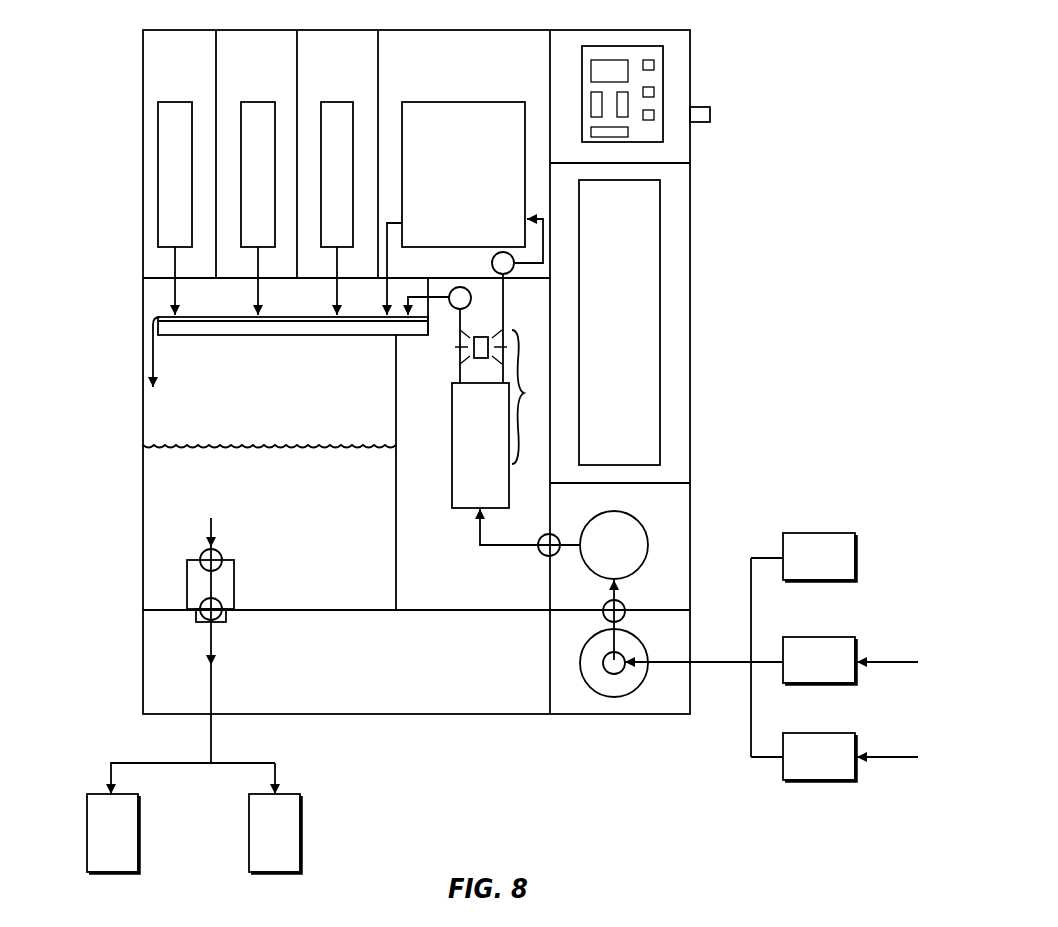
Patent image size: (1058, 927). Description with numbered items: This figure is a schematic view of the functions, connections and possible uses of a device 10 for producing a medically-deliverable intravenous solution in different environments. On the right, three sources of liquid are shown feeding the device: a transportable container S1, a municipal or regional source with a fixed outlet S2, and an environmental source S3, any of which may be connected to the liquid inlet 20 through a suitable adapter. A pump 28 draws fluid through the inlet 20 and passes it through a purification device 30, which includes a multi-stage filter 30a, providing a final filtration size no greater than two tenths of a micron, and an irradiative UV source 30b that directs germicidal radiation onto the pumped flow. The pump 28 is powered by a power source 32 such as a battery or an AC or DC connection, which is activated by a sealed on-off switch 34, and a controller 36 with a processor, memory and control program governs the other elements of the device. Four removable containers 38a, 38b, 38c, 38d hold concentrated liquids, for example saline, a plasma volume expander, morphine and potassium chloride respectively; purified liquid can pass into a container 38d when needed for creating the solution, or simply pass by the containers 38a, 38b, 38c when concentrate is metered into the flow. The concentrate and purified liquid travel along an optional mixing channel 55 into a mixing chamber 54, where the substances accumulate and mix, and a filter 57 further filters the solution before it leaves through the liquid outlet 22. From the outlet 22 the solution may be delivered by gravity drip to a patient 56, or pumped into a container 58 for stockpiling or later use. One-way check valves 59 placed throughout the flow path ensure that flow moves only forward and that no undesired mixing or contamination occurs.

The device 10 is at (797, 172).
The liquid inlet 20 is at (640, 686).
The liquid outlet 22 is at (227, 613).
The pump 28 is at (640, 521).
The purification device 30 is at (530, 397).
The multi-stage filter 30a is at (452, 492).
The UV source 30b is at (483, 337).
The power source 32 is at (662, 297).
The on-off switch 34 is at (706, 105).
The controller 36 is at (657, 65).
The container 38a is at (175, 103).
The container 38b is at (258, 103).
The container 38c is at (337, 103).
The container 38d is at (482, 103).
The mixing chamber 54 is at (245, 493).
The mixing channel 55 is at (285, 337).
The patient 56 is at (87, 834).
The filter 57 is at (229, 577).
The container 58 is at (300, 829).
The one-way check valve 59 is at (463, 287).
The source of liquid S1 is at (840, 533).
The source of liquid S2 is at (840, 637).
The source of liquid S3 is at (840, 733).